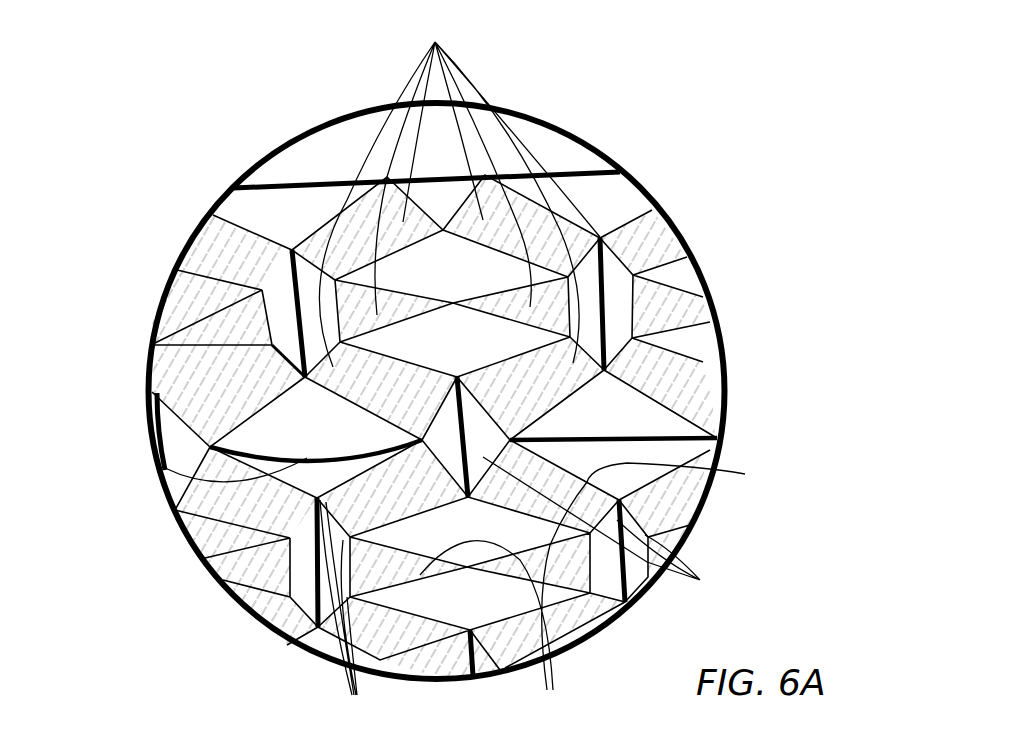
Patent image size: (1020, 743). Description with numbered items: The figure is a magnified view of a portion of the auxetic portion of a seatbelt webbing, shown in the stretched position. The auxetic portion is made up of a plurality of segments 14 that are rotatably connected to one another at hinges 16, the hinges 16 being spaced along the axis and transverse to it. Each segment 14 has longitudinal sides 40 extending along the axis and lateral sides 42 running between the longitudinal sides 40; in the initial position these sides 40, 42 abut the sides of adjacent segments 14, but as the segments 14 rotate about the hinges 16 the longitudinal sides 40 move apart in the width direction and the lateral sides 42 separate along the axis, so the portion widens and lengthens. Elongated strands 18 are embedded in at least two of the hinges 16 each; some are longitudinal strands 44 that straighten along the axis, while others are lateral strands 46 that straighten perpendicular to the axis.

The segments 14 is at (459, 189).
The hinges 16 is at (268, 592).
The strands 18 is at (158, 470).
The longitudinal strands 44 is at (566, 172).
The lateral strands 46 is at (606, 307).
The longitudinal sides 40 is at (598, 590).
The lateral sides 42 is at (609, 525).